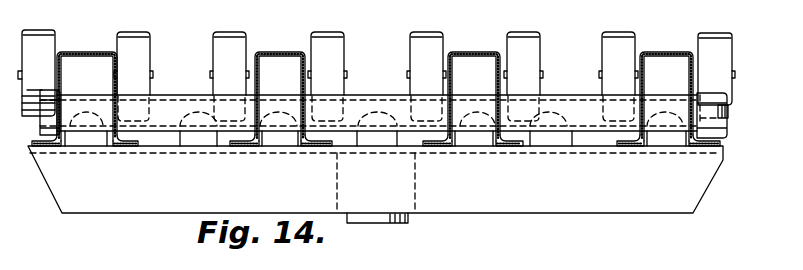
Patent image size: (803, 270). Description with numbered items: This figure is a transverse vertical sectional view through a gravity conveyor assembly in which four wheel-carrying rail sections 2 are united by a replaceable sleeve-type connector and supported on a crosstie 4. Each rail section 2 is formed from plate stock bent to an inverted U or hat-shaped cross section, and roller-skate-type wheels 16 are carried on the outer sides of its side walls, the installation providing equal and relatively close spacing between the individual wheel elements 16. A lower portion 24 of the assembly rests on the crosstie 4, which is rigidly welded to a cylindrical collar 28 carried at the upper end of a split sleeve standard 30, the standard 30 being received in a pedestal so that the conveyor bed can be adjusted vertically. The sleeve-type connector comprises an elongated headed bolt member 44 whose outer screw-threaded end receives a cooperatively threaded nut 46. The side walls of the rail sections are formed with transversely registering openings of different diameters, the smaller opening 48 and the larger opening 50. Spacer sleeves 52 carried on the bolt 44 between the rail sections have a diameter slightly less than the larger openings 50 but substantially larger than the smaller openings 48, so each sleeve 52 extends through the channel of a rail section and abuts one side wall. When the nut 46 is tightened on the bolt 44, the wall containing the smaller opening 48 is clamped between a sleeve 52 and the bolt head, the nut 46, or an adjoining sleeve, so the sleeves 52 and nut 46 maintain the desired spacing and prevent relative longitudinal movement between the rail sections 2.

The rail section 2 is at (379, 74).
The crosstie support 4 is at (580, 198).
The wheel 16 is at (222, 43).
The support strip 24 is at (273, 143).
The cylindrical collar 28 is at (417, 173).
The split sleeve standard 30 is at (385, 218).
The bolt member 44 is at (725, 105).
The nut 46 is at (728, 131).
The smaller opening 48 is at (59, 99).
The larger opening 50 is at (111, 95).
The spacer sleeve 52 is at (140, 95).